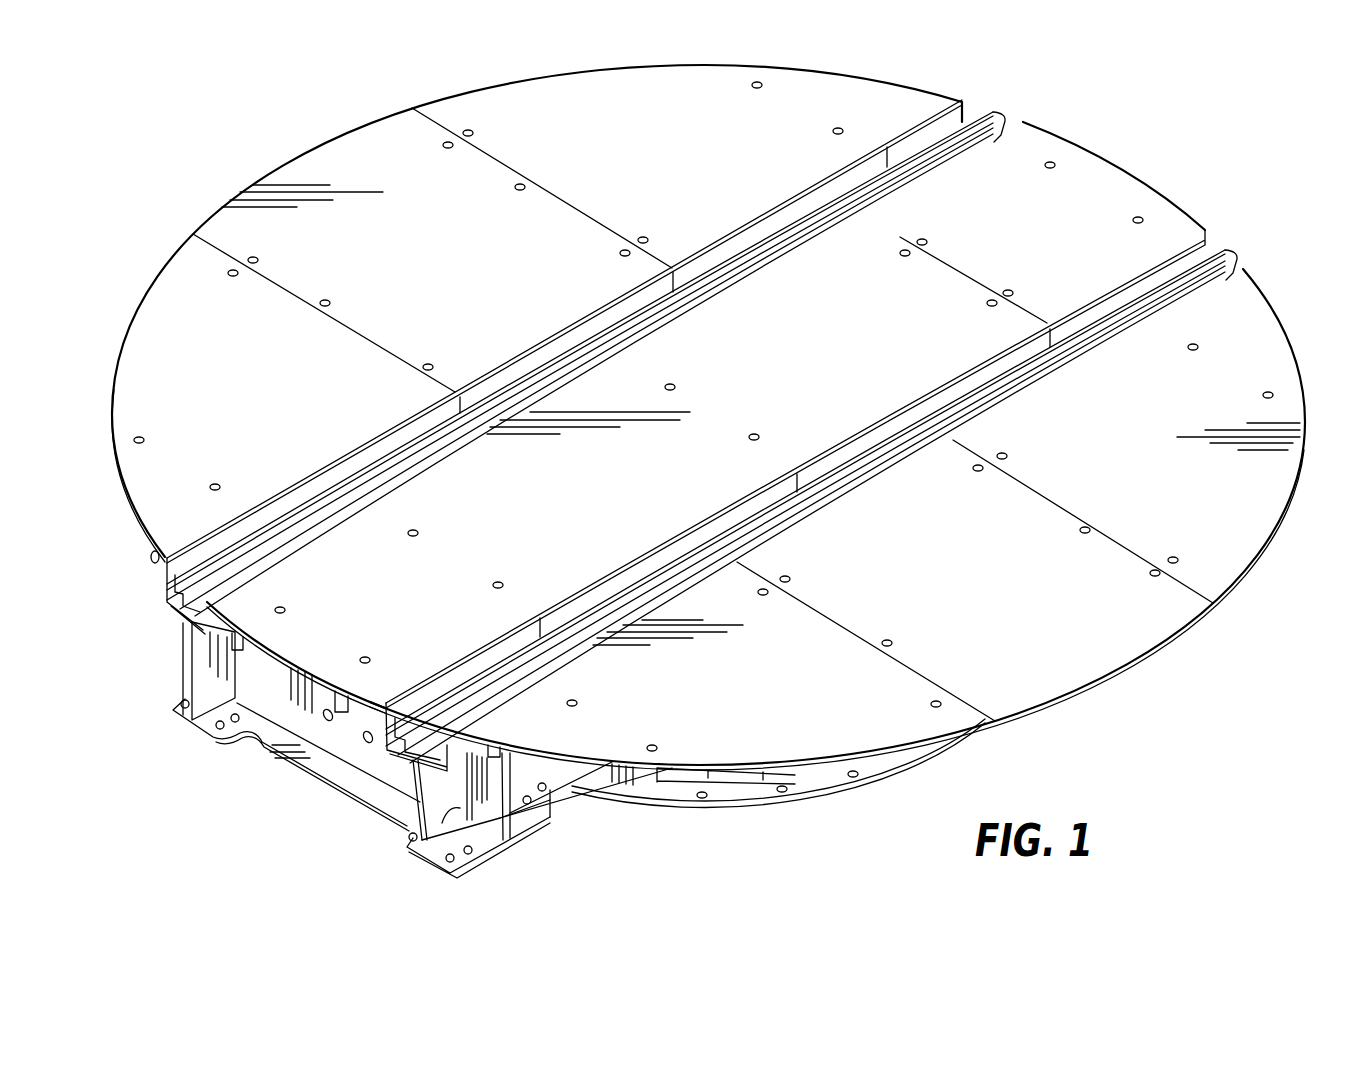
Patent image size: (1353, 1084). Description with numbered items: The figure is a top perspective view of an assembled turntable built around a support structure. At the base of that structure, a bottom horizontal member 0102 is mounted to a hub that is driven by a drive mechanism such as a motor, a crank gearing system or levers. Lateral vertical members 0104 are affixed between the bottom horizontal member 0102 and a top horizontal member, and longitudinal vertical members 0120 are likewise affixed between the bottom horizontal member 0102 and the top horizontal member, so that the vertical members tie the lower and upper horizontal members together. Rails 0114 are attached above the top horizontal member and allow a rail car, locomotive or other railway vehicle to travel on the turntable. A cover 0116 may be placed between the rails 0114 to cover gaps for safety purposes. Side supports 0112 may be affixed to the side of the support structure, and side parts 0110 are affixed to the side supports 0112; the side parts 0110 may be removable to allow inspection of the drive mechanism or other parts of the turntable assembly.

The bottom horizontal member 0102 is at (340, 760).
The lateral vertical members 0104 is at (283, 687).
The side parts 0110 is at (783, 732).
The side supports 0112 is at (580, 803).
The rails 0114 is at (985, 112).
The cover 0116 is at (1163, 223).
The longitudinal vertical members 0120 is at (420, 850).